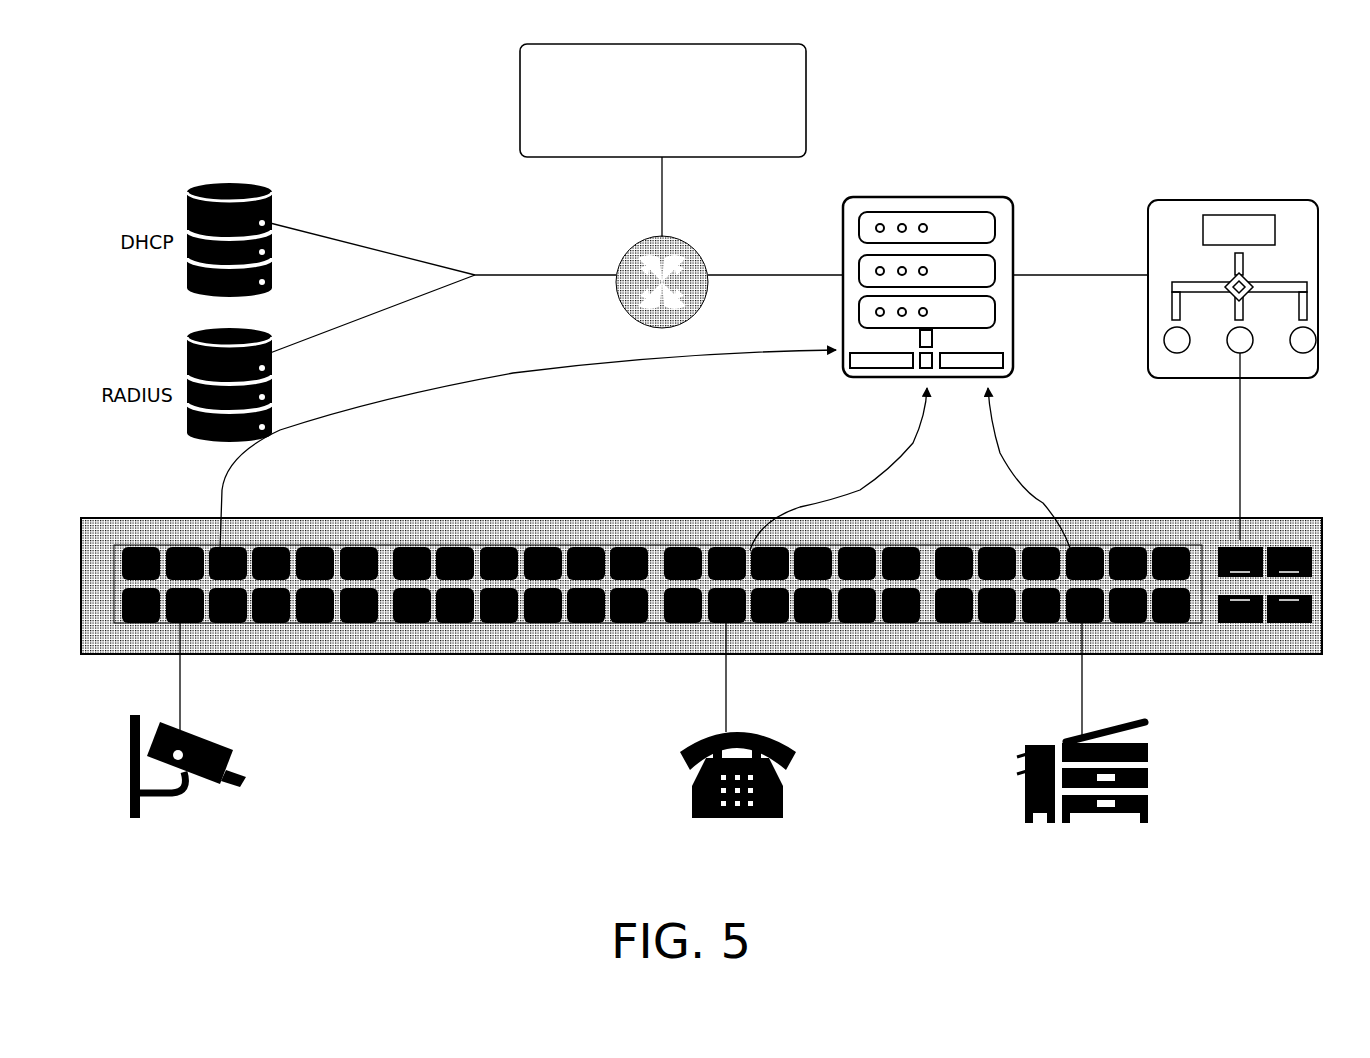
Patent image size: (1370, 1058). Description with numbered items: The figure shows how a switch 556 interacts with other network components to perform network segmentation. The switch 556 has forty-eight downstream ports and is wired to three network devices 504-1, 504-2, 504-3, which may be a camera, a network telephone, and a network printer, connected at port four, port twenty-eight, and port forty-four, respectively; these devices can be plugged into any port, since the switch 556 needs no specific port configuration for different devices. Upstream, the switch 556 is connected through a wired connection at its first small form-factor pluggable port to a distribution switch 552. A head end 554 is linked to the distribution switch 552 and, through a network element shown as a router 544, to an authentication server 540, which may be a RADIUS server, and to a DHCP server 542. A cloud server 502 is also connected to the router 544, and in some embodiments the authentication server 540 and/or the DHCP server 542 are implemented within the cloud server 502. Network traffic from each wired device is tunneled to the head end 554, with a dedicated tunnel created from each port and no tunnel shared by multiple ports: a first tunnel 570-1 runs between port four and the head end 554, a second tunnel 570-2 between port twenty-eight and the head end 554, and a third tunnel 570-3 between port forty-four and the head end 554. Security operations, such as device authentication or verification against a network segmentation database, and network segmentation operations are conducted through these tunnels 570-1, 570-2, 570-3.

The cloud server 502 is at (663, 100).
The authentication server 540 is at (290, 322).
The DHCP server 542 is at (285, 184).
The router 544 is at (694, 250).
The distribution switch 552 is at (1306, 198).
The head end 554 is at (1002, 197).
The switch 556 is at (1320, 518).
The first tunnel 570-1 is at (514, 372).
The second tunnel 570-2 is at (833, 498).
The third tunnel 570-3 is at (1013, 486).
The network device 504-1 is at (208, 745).
The network device 504-2 is at (770, 740).
The network device 504-3 is at (1138, 722).